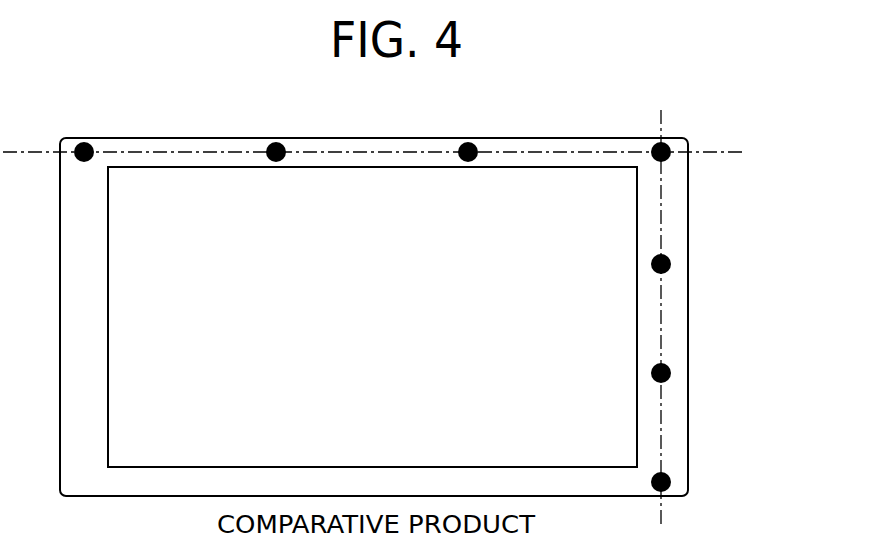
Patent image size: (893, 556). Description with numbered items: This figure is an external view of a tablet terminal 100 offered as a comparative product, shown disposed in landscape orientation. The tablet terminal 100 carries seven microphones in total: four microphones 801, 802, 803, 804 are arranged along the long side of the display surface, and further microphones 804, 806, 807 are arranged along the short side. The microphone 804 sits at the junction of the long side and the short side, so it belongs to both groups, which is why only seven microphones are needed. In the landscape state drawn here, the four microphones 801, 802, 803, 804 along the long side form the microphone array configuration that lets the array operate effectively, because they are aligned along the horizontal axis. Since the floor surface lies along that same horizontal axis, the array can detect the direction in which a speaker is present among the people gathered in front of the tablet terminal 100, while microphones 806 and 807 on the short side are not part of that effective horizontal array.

The tablet terminal 100 is at (722, 127).
The microphone 801 is at (90, 146).
The microphone 802 is at (282, 146).
The microphone 803 is at (475, 146).
The microphone 804 is at (666, 144).
The microphone 806 is at (670, 371).
The microphone 807 is at (670, 480).